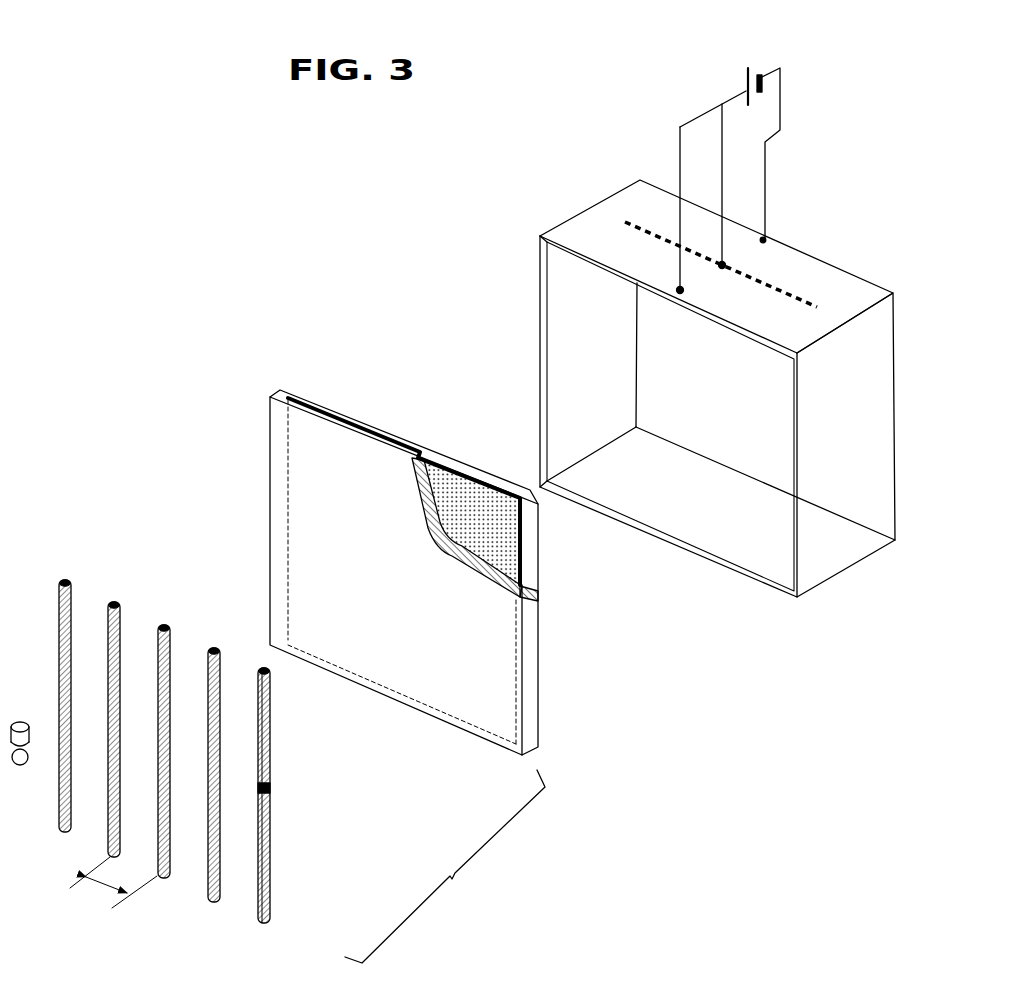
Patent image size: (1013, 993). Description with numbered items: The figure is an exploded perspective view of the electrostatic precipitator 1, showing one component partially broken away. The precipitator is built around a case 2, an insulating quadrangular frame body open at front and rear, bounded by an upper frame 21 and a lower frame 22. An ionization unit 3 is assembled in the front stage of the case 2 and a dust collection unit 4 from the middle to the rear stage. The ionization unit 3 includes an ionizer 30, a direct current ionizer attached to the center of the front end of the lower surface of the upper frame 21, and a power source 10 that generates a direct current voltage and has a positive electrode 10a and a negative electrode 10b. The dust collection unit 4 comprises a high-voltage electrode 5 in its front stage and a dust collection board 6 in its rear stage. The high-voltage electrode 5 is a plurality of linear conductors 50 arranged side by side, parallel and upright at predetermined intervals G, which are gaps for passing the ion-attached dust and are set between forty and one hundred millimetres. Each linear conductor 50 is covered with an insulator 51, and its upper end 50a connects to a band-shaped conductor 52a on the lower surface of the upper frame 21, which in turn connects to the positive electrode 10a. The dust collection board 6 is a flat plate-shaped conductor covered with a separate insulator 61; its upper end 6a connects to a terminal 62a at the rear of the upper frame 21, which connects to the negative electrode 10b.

The electrostatic precipitator 1 is at (276, 251).
The case 2 is at (687, 365).
The upper frame 21 is at (590, 224).
The lower frame 22 is at (577, 483).
The band-shaped conductor 52a is at (643, 200).
The terminal 62a is at (787, 249).
The power source 10 is at (727, 152).
The positive electrode 10a is at (742, 90).
The negative electrode 10b is at (770, 72).
The insulator 61 is at (444, 572).
The dust collection board 6 is at (507, 560).
The upper end 6a is at (440, 448).
The dust collection unit 4 is at (445, 866).
The high-voltage electrode 5 is at (177, 765).
The linear conductor 50 is at (177, 740).
The upper end 50a is at (116, 603).
The insulator 51 is at (107, 782).
The interval G is at (171, 928).
The ionization unit 3 is at (25, 670).
The ionizer 30 is at (22, 718).